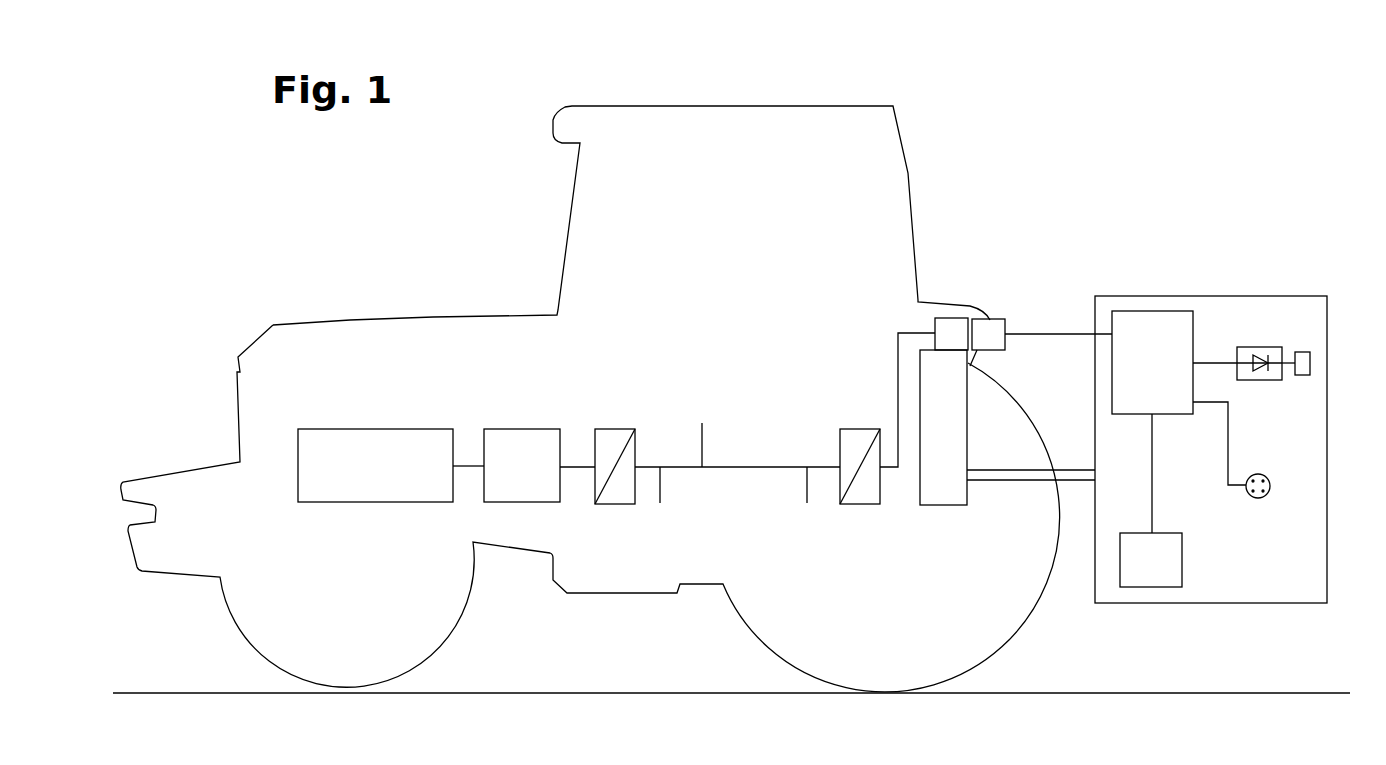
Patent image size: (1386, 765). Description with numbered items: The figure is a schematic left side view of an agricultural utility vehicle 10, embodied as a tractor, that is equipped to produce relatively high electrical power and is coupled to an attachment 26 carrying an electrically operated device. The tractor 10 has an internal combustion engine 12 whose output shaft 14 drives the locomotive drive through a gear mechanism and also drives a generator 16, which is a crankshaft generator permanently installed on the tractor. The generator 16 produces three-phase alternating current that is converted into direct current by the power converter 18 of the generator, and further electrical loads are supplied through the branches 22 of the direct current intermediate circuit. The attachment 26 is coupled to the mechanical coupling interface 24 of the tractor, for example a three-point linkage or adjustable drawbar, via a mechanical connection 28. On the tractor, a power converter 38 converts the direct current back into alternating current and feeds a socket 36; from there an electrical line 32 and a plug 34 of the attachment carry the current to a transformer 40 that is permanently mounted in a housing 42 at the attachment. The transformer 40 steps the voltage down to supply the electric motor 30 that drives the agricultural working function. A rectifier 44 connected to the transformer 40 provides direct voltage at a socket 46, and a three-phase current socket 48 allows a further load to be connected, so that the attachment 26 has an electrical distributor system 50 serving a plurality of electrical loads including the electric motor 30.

The agricultural utility vehicle 10 is at (225, 302).
The internal combustion engine 12 is at (363, 477).
The output shaft 14 is at (468, 465).
The generator 16 is at (510, 477).
The power converter 18 is at (617, 429).
The branches 22 is at (702, 440).
The mechanical coupling interface 24 is at (931, 430).
The attachment 26 is at (1195, 295).
The mechanical connection 28 is at (1078, 478).
The electric motor 30 is at (1139, 572).
The electrical line 32 is at (1065, 332).
The plug 34 is at (1005, 323).
The socket 36 is at (950, 318).
The power converter 38 is at (850, 429).
The transformer 40 is at (1140, 370).
The housing 42 is at (1152, 336).
The rectifier 44 is at (1263, 347).
The socket 46 is at (1302, 375).
The three-phase current socket 48 is at (1262, 497).
The electrical distributor system 50 is at (1230, 528).